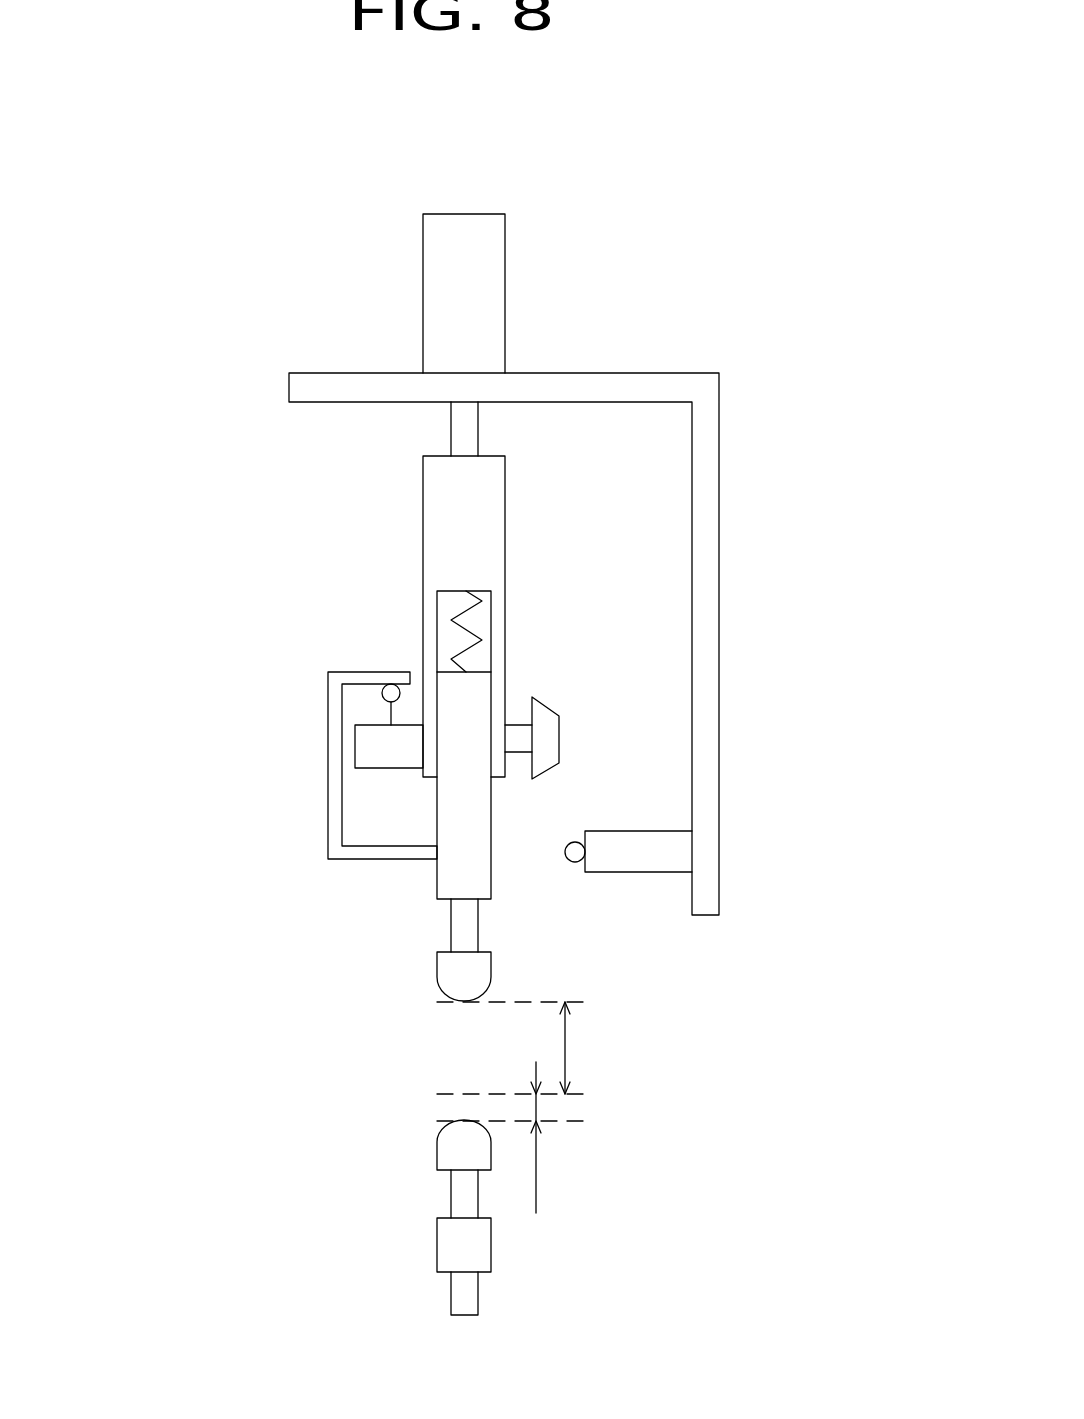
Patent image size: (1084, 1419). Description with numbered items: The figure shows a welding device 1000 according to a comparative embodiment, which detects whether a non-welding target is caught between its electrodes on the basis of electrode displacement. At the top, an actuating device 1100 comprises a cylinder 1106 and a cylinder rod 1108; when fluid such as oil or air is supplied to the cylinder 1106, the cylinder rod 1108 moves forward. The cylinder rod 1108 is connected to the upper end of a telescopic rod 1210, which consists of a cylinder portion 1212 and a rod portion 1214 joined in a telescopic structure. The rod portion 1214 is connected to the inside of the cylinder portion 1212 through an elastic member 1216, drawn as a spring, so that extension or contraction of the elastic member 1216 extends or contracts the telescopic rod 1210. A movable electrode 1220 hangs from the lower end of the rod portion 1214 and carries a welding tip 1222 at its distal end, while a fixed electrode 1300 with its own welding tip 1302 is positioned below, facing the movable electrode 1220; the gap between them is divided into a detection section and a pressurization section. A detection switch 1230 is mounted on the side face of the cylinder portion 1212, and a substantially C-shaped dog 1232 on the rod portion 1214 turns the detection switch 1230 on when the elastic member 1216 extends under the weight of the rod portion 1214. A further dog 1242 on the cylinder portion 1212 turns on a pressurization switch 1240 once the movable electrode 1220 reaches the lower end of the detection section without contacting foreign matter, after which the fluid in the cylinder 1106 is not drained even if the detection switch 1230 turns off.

The welding device 1000 is at (196, 204).
The actuating device 1100 is at (373, 291).
The cylinder 1106 is at (470, 214).
The cylinder rod 1108 is at (464, 427).
The telescopic rod 1210 is at (385, 529).
The cylinder portion 1212 is at (485, 506).
The rod portion 1214 is at (450, 877).
The elastic member 1216 is at (478, 636).
The movable electrode 1220 is at (403, 938).
The welding tip 1222 is at (448, 969).
The detection switch 1230 is at (368, 743).
The dog 1232 is at (367, 675).
The pressurization switch 1240 is at (637, 861).
The dog 1242 is at (544, 713).
The fixed electrode 1300 is at (421, 1201).
The welding tip 1302 is at (453, 1151).